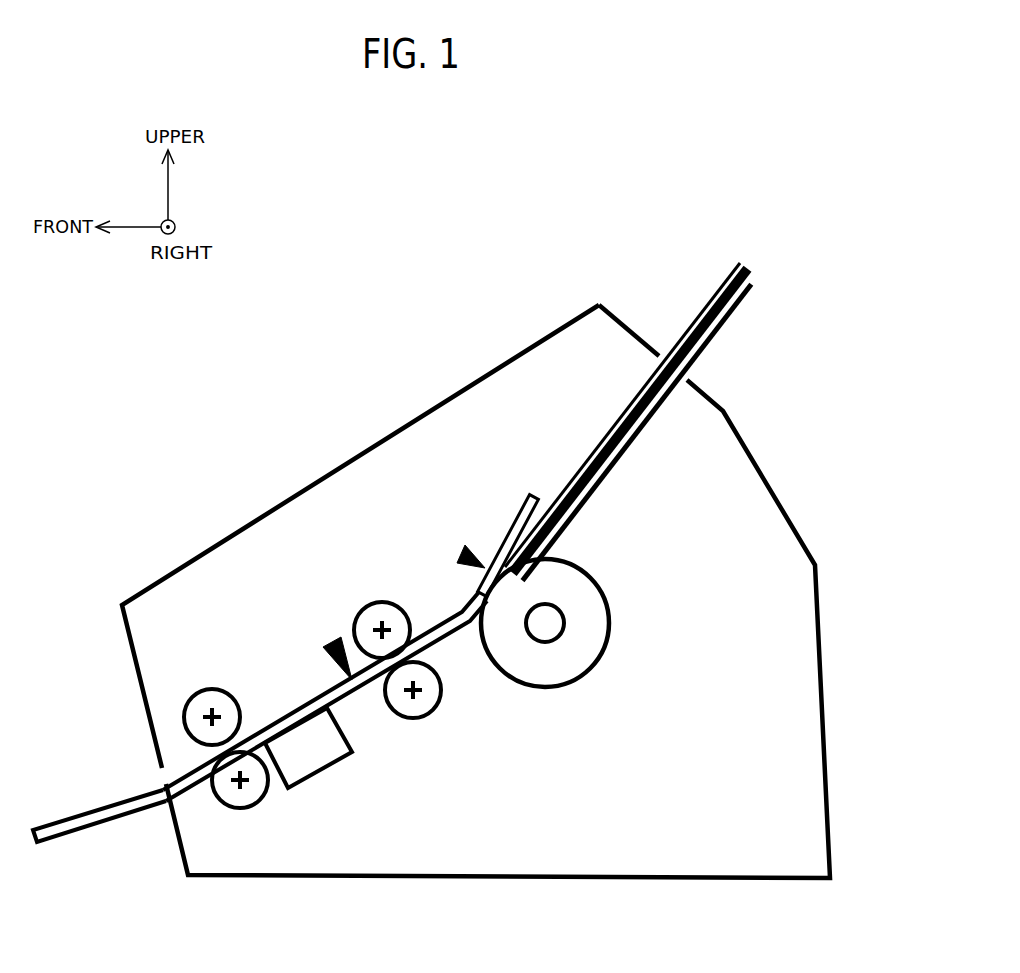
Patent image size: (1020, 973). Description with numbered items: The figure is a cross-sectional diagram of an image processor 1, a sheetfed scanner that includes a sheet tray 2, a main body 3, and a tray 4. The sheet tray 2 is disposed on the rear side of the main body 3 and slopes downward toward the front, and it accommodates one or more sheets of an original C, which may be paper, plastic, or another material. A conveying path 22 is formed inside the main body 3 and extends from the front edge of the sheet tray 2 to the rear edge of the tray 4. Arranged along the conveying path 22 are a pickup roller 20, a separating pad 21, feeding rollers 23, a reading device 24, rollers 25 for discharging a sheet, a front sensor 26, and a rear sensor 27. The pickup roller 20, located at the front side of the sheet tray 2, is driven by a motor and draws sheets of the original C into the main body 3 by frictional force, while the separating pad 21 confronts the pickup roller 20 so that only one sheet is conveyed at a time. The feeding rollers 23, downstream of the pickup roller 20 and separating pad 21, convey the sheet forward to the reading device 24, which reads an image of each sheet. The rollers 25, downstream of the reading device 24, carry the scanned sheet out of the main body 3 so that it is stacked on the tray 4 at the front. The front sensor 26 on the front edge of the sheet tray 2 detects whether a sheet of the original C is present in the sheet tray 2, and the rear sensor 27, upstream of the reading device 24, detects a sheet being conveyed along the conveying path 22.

The image processor 1 is at (438, 268).
The sheet tray 2 is at (731, 311).
The main body 3 is at (570, 335).
The tray 4 is at (75, 818).
The pickup roller 20 is at (598, 640).
The separating pad 21 is at (513, 535).
The conveying path 22 is at (447, 622).
The feeding rollers 23 is at (428, 672).
The reading device 24 is at (327, 752).
The rollers 25 is at (218, 777).
The front sensor 26 is at (462, 553).
The rear sensor 27 is at (333, 640).
The original C is at (720, 287).